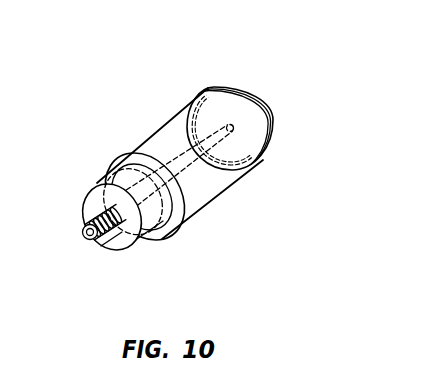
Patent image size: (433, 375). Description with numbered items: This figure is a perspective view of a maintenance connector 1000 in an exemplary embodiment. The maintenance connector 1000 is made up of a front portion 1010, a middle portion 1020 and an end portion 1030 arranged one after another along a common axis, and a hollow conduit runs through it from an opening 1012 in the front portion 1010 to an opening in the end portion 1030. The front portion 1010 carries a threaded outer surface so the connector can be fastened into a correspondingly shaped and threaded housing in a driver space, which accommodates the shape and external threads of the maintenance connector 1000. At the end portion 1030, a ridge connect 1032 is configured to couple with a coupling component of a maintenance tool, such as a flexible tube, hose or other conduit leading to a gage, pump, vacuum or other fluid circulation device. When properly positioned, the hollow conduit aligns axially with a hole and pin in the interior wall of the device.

The maintenance connector 1000 is at (258, 80).
The front portion 1010 is at (124, 252).
The opening 1012 is at (83, 234).
The middle portion 1020 is at (148, 264).
The end portion 1030 is at (182, 242).
The ridge connect 1032 is at (220, 86).